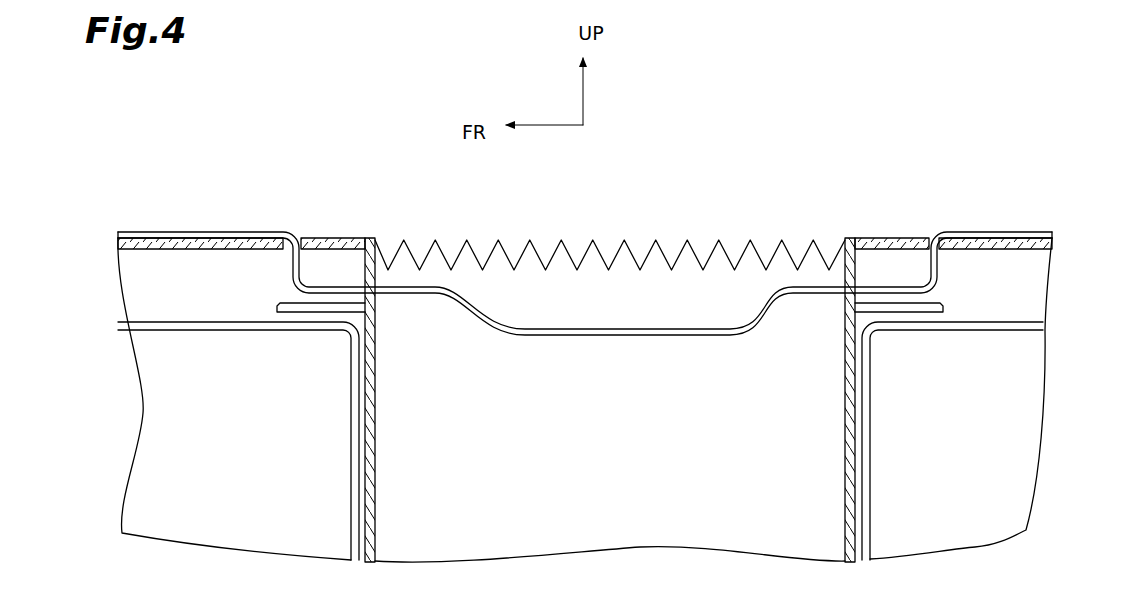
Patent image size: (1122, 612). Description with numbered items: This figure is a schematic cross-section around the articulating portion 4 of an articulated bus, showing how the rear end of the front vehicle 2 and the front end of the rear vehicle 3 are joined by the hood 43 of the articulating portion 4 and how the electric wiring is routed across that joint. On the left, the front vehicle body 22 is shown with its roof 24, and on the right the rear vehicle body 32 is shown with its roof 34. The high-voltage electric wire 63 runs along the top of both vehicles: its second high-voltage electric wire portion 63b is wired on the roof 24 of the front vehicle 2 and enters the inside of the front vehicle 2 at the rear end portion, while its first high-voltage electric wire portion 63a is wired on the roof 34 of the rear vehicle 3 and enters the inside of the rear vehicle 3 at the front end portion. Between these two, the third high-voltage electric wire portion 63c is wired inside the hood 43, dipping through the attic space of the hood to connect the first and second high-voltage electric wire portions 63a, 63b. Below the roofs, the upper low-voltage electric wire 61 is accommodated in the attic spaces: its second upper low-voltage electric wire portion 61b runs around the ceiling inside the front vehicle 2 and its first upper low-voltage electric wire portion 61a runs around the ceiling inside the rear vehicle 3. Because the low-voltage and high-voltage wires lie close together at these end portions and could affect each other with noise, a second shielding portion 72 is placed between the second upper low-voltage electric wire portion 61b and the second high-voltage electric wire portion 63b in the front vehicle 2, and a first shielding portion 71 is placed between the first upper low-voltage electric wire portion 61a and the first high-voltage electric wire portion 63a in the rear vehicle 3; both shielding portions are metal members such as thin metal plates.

The front vehicle 2 is at (233, 180).
The rear vehicle 3 is at (995, 180).
The articulating portion 4 is at (610, 201).
The hood 43 is at (575, 240).
The front vehicle body 22 is at (246, 357).
The roof of the front vehicle body 24 is at (325, 240).
The rear vehicle body 32 is at (948, 357).
The roof of the rear vehicle body 34 is at (892, 240).
The upper low-voltage electric wire 61 is at (580, 441).
The first upper low-voltage electric wire portion 61a is at (940, 334).
The second upper low-voltage electric wire portion 61b is at (197, 332).
The high-voltage electric wire 63 is at (614, 283).
The first high-voltage electric wire portion 63a is at (1020, 232).
The second high-voltage electric wire portion 63b is at (167, 232).
The third high-voltage electric wire portion 63c is at (593, 340).
The first shielding portion 71 is at (940, 303).
The second shielding portion 72 is at (282, 303).